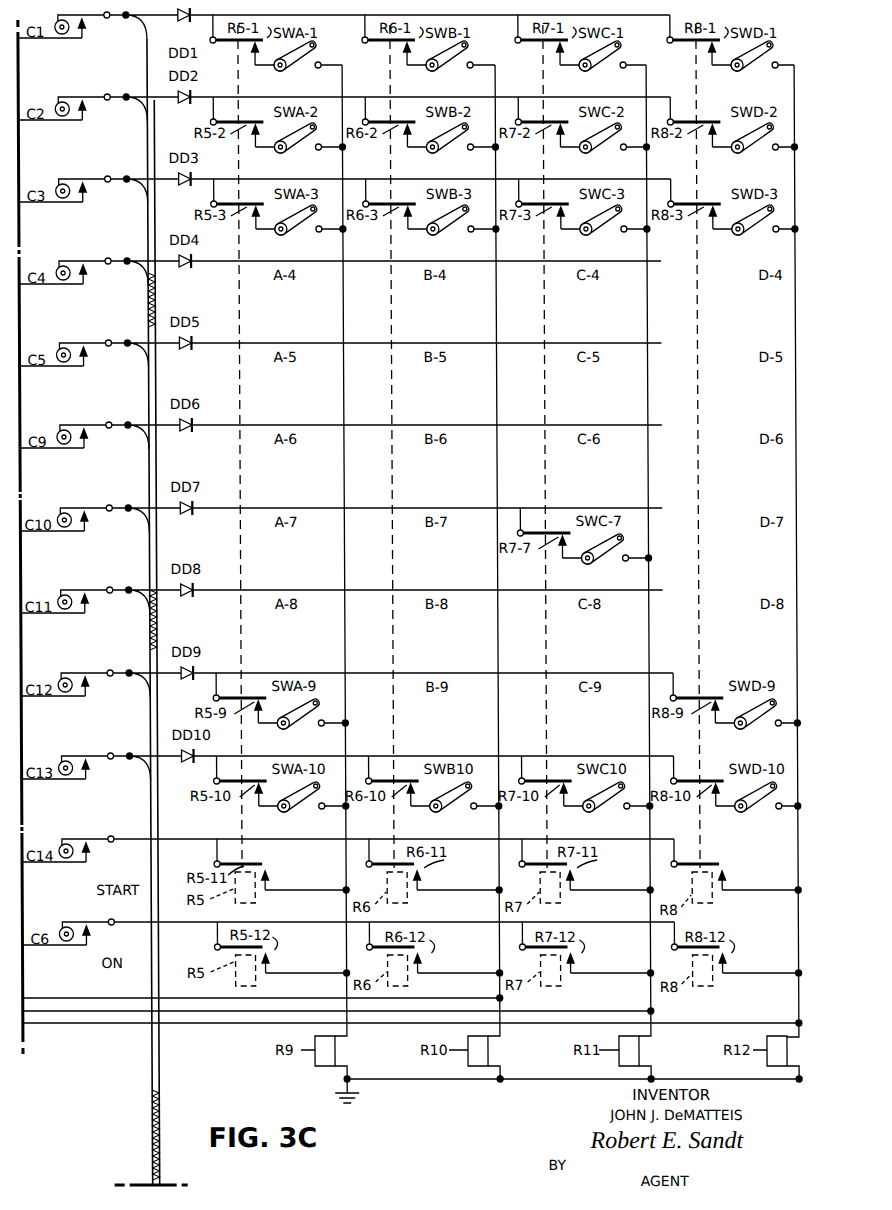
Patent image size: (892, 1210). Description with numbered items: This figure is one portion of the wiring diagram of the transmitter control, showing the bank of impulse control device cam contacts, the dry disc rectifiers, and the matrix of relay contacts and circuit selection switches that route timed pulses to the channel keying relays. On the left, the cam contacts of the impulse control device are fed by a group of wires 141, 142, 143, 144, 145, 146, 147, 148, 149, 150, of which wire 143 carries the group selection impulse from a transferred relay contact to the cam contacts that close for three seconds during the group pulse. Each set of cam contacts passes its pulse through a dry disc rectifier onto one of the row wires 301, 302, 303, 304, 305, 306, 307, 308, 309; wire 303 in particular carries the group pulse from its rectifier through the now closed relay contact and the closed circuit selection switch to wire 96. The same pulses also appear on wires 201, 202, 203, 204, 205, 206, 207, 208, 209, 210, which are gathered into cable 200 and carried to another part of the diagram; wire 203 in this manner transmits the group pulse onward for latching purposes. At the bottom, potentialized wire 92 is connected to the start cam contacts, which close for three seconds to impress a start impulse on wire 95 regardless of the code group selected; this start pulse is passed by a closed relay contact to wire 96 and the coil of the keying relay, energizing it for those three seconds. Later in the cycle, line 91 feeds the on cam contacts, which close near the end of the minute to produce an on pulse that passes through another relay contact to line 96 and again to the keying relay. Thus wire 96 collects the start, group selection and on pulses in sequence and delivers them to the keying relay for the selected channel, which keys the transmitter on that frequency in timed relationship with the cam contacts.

The counter relay coil C1 141 is at (28, 39).
The counter relay coil C2 142 is at (28, 121).
The wire 143 is at (28, 203).
The counter relay coil C4 144 is at (28, 285).
The counter relay coil C5 145 is at (28, 367).
The counter relay coil C9 146 is at (28, 449).
The counter relay coil C10 147 is at (28, 532).
The counter relay coil C11 148 is at (28, 614).
The counter relay coil C12 149 is at (28, 697).
The counter relay coil C13 150 is at (28, 780).
The input conductor 201 is at (142, 20).
The input conductor 202 is at (142, 102).
The wire 203 is at (142, 184).
The input conductor 204 is at (142, 266).
The input conductor 205 is at (142, 348).
The input conductor 206 is at (142, 430).
The input conductor 207 is at (142, 513).
The input conductor 208 is at (142, 595).
The input conductor 209 is at (142, 678).
The input conductor 210 is at (142, 761).
The row conductor 301 is at (347, 17).
The row conductor 302 is at (265, 97).
The wire 303 is at (265, 179).
The row conductor 304 is at (265, 261).
The row conductor 305 is at (265, 343).
The row conductor 306 is at (265, 425).
The row conductor 307 is at (265, 508).
The row conductor 308 is at (265, 590).
The row conductor 309 is at (265, 673).
The cable 200 is at (157, 1084).
The wire 95 is at (394, 823).
The wire 96 is at (716, 871).
The wire 92 is at (30, 863).
The line 91 is at (30, 946).